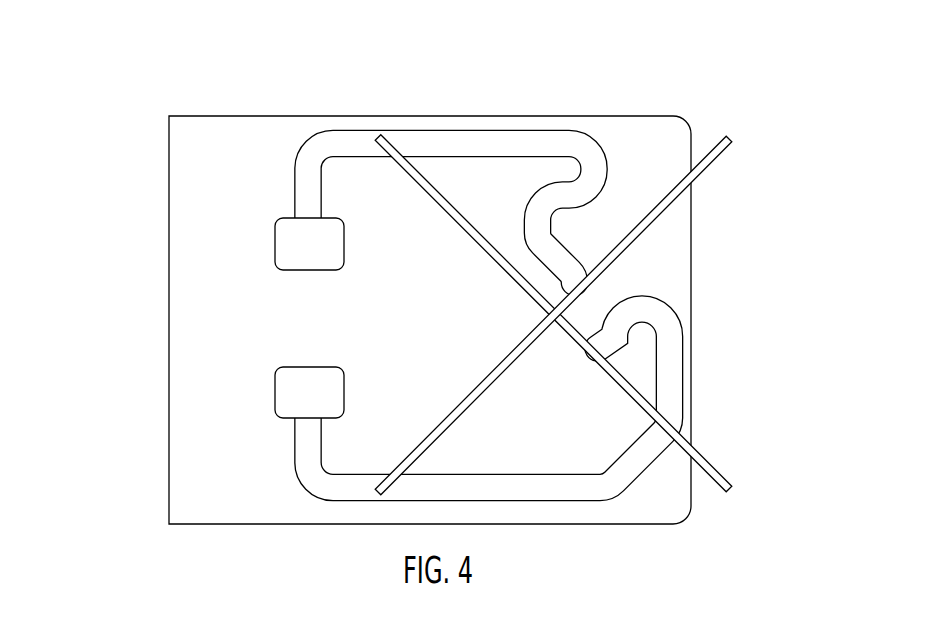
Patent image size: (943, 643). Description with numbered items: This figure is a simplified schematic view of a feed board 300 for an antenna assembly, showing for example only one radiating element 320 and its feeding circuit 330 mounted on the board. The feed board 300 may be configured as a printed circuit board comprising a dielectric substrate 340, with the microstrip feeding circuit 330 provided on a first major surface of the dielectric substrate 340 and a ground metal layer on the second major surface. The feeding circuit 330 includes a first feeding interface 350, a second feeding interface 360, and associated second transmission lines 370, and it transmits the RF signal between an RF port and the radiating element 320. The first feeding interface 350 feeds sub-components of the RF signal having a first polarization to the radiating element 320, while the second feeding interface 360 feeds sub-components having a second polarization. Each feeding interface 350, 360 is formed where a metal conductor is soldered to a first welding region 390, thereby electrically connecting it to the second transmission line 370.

The feed board 300 is at (421, 273).
The radiating element 320 is at (711, 163).
The feeding circuit 330 is at (373, 320).
The dielectric substrate 340 is at (200, 147).
The first feeding interface 350 is at (295, 245).
The second feeding interface 360 is at (295, 403).
The second transmission lines 370 is at (490, 142).
The first welding region 390 is at (195, 319).